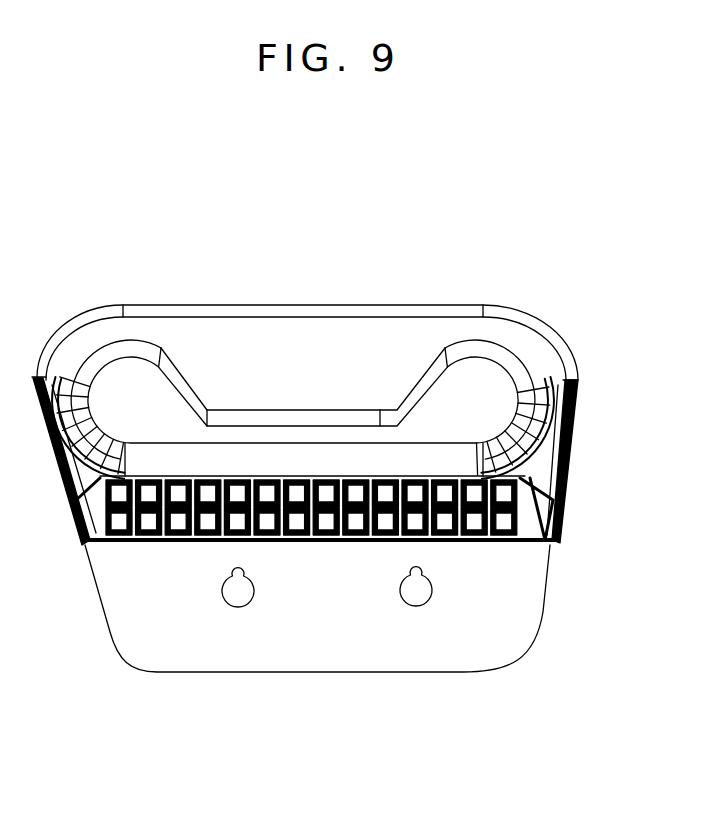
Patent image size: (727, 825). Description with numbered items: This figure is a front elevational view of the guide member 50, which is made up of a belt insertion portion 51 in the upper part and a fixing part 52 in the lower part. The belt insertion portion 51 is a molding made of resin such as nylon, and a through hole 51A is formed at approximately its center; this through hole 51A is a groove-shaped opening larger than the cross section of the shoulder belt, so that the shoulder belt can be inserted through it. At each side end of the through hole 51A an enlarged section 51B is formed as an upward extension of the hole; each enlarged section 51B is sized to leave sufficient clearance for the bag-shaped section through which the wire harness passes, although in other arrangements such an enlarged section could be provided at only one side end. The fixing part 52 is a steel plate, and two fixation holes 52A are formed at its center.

The guide member 50 is at (490, 268).
The belt insertion portion 51 is at (300, 330).
The through hole 51A is at (310, 430).
The enlarged section 51B is at (123, 375).
The fixing part 52 is at (333, 633).
The fixation hole 52A is at (236, 594).